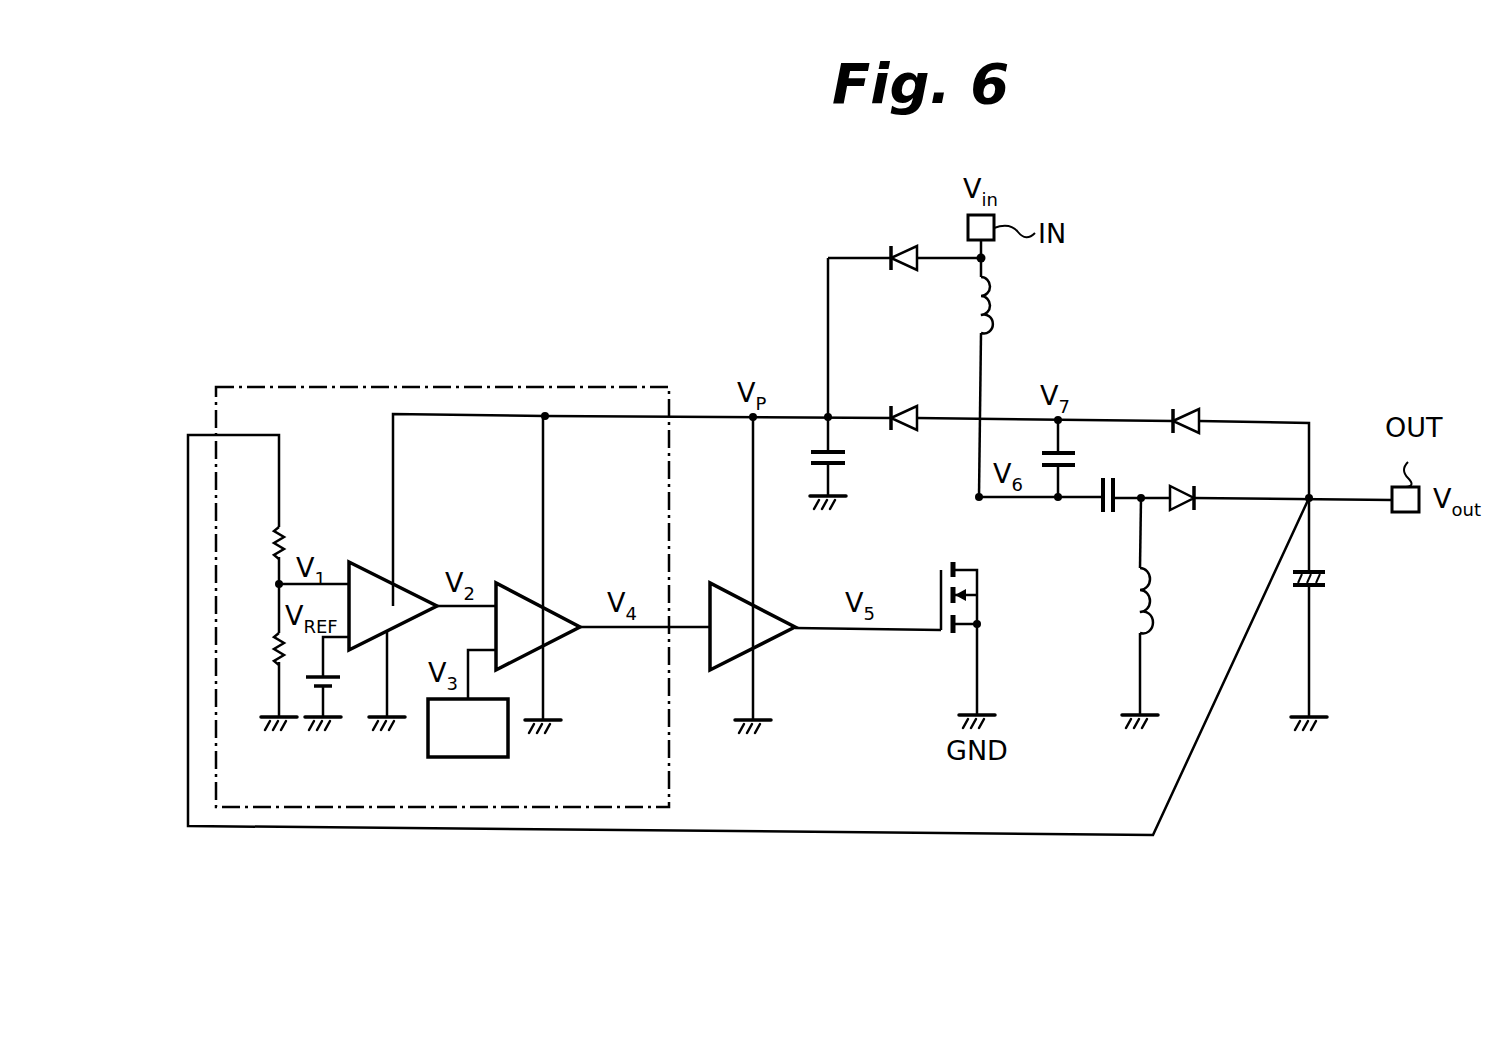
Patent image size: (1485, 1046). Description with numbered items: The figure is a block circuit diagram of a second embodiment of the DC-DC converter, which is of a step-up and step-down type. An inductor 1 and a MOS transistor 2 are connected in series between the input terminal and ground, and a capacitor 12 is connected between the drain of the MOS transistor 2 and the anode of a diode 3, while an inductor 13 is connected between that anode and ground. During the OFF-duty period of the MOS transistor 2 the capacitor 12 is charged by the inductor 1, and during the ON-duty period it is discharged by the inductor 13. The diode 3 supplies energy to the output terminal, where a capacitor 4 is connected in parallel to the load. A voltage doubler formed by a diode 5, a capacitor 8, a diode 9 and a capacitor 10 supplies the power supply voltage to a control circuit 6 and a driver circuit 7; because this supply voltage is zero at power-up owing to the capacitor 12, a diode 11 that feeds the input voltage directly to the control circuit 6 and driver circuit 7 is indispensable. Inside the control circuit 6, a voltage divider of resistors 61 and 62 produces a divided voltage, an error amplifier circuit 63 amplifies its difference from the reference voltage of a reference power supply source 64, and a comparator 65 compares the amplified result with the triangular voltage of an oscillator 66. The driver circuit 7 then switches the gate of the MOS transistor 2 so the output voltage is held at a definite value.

The inductor 1 is at (988, 328).
The MOS transistor 2 is at (939, 577).
The diode 3 is at (1182, 514).
The capacitor 4 is at (1318, 570).
The diode 5 is at (1188, 408).
The control circuit 6 is at (488, 387).
The driver circuit 7 is at (757, 572).
The capacitor 8 is at (1064, 410).
The diode 9 is at (897, 405).
The capacitor 10 is at (835, 447).
The diode 11 is at (904, 245).
The capacitor 12 is at (1120, 485).
The inductor 13 is at (1150, 622).
The resistor 61 is at (289, 531).
The resistor 62 is at (272, 640).
The error amplifier circuit 63 is at (404, 567).
The reference power supply source 64 is at (330, 672).
The comparator 65 is at (560, 568).
The oscillator 66 is at (509, 713).